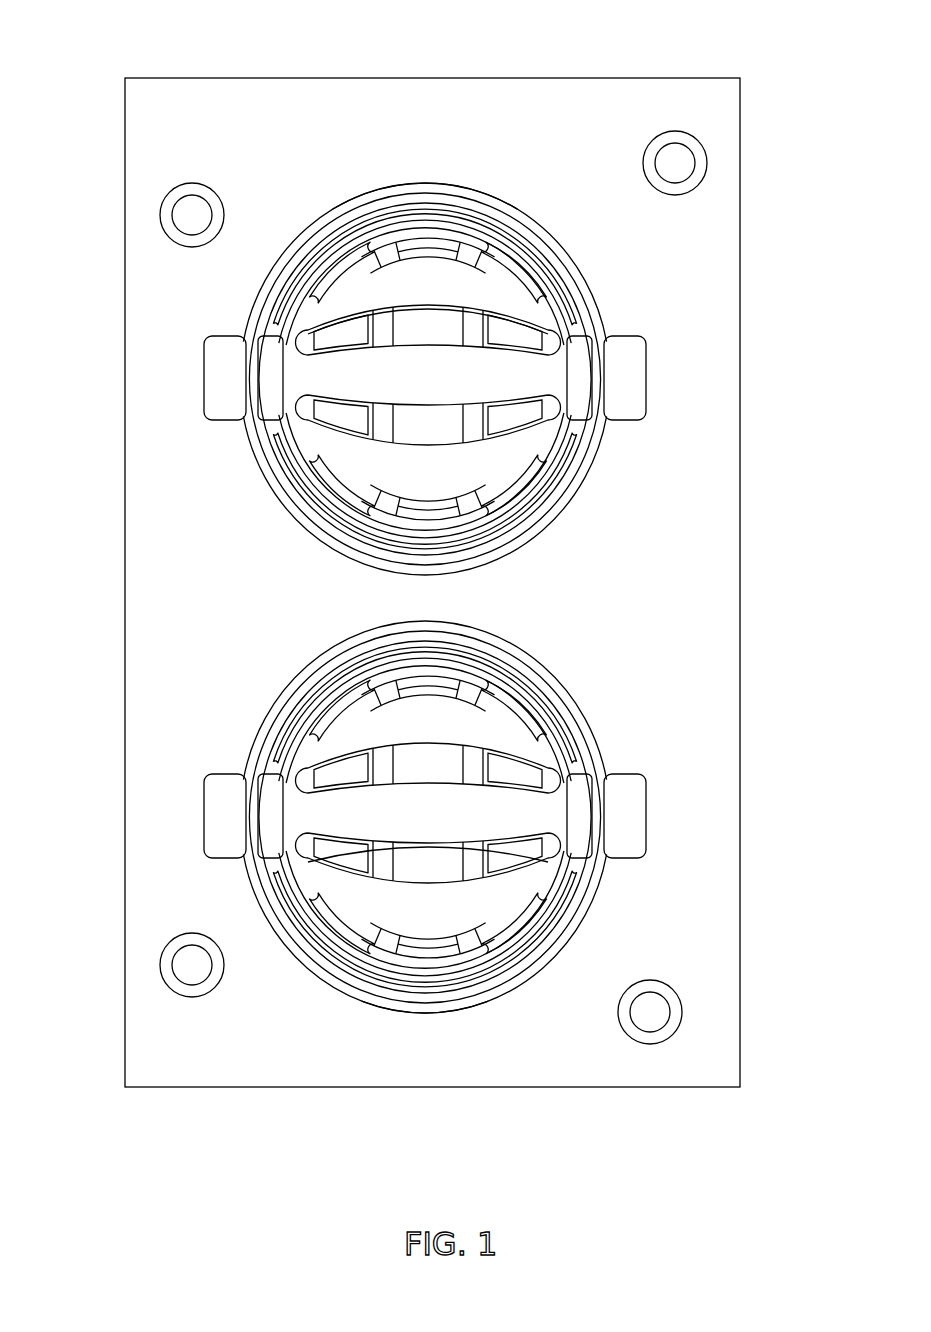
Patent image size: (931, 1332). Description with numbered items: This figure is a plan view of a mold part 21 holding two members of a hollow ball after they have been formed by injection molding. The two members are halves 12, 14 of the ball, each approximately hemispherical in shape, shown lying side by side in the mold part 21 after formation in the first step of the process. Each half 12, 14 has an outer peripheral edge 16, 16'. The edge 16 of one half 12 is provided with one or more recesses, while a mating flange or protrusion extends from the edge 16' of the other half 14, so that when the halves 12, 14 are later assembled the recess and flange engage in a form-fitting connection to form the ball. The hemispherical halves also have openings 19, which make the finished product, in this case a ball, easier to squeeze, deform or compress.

The mold part 21 is at (717, 292).
The half of the ball 14 is at (593, 472).
The half of the ball 12 is at (605, 905).
The openings 19 is at (430, 331).
The outer peripheral edge 16 is at (378, 1099).
The outer peripheral edge 16' is at (411, 114).